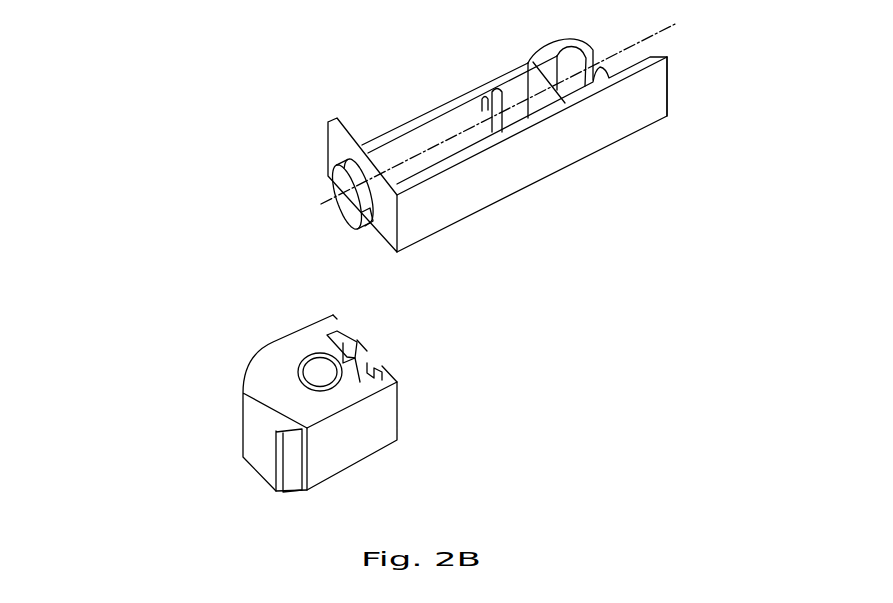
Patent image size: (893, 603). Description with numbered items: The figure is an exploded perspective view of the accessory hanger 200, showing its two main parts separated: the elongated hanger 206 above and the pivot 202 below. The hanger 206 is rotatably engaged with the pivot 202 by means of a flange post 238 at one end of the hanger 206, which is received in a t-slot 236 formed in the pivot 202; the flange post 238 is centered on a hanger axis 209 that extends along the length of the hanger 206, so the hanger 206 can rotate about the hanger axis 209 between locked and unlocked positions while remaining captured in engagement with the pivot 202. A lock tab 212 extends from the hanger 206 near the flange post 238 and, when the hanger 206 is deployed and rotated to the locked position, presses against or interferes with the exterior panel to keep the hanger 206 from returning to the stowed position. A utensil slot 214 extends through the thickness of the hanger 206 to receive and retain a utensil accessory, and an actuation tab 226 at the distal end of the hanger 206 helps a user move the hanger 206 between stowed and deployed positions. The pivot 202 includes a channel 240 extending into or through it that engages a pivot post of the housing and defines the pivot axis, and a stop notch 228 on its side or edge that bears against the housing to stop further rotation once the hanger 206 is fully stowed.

The accessory hanger 200 is at (129, 148).
The pivot 202 is at (263, 380).
The hanger 206 is at (527, 172).
The hanger axis 209 is at (657, 32).
The lock tab 212 is at (330, 138).
The utensil slot 214 is at (520, 94).
The actuation tab 226 is at (647, 88).
The stop notch 228 is at (292, 457).
The t-slot 236 is at (358, 358).
The flange post 238 is at (330, 188).
The channel 240 is at (298, 372).